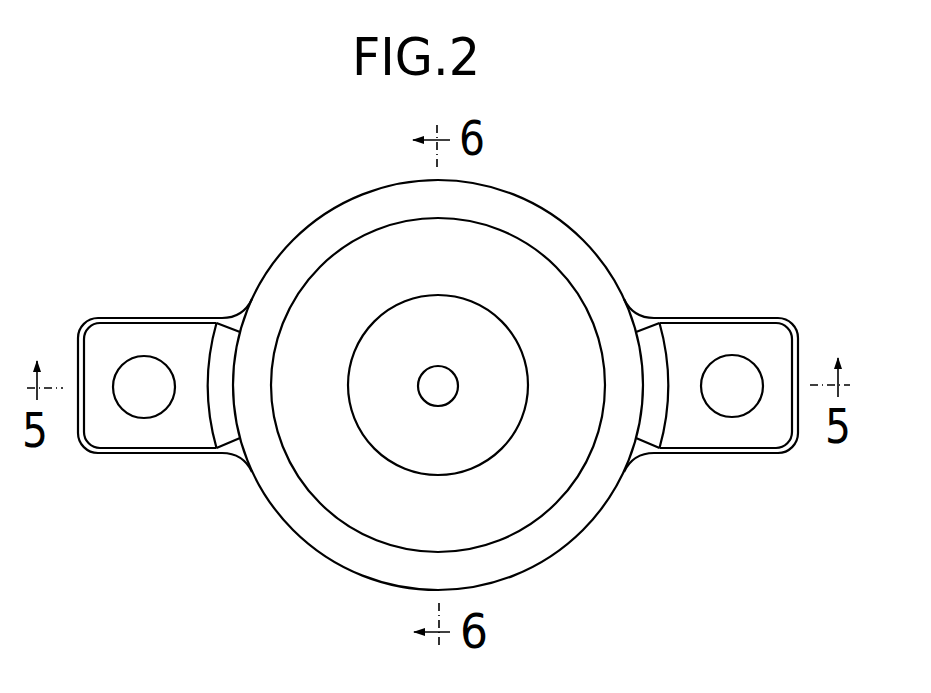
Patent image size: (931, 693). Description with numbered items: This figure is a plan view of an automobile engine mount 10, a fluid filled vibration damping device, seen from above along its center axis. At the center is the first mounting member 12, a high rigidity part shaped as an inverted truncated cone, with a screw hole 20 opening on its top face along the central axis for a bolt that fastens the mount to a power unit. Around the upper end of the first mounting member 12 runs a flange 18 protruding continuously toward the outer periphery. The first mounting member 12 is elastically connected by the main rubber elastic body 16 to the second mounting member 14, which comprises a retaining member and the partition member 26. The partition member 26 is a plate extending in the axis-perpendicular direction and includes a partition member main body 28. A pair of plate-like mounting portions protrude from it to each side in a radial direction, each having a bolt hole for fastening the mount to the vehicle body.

The engine mount 10 is at (599, 187).
The first mounting member 12 is at (394, 301).
The second mounting member 14 is at (74, 458).
The main rubber elastic body 16 is at (520, 485).
The flange 18 is at (492, 350).
The screw hole 20 is at (455, 398).
The partition member 26 is at (646, 459).
The partition member main body 28 is at (639, 385).